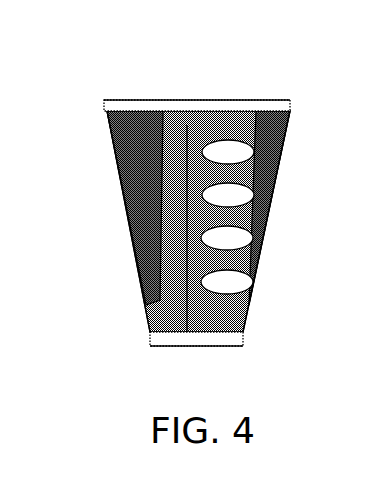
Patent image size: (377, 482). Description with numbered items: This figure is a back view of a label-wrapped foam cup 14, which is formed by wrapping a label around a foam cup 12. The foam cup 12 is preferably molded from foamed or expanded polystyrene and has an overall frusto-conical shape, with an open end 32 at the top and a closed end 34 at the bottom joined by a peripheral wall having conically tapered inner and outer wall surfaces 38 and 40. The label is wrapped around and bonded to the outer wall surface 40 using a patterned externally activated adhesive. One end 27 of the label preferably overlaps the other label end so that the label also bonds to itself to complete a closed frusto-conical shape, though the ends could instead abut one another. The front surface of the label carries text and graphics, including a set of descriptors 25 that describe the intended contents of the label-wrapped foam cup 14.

The label-wrapped foam cup 14 is at (220, 76).
The foam cup 12 is at (245, 341).
The set of descriptors 25 is at (269, 200).
The one end of the label 27 is at (187, 128).
The open end 32 is at (124, 101).
The closed end 34 is at (189, 346).
The inner wall surface 38 is at (277, 100).
The outer wall surface 40 is at (107, 112).